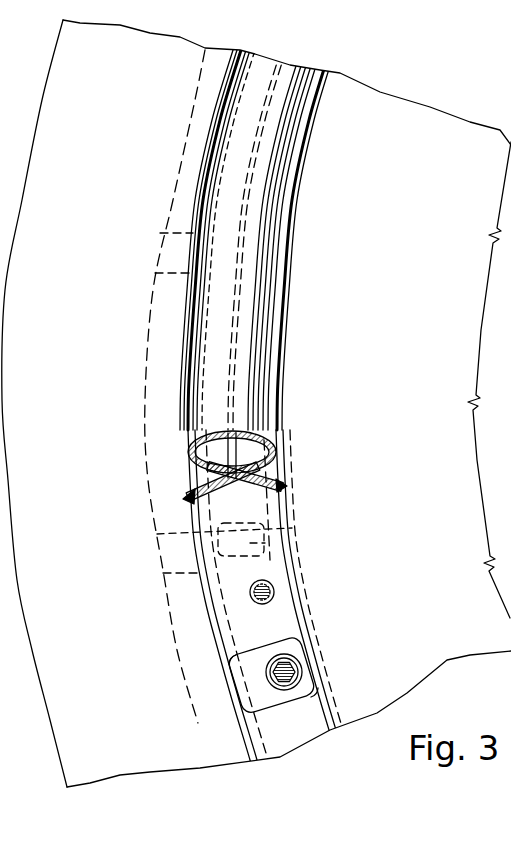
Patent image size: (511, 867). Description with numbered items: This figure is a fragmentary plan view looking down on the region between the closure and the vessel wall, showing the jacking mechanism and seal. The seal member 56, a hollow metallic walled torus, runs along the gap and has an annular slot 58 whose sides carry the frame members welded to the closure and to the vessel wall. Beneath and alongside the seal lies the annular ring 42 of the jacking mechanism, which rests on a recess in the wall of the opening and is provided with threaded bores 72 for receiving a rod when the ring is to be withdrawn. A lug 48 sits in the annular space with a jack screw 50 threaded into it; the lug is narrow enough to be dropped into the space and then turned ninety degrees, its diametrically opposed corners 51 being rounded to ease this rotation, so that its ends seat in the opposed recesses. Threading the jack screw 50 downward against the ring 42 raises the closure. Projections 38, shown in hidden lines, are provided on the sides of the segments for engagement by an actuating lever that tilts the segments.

The projections 38 is at (292, 528).
The annular ring 42 is at (236, 611).
The lugs 48 is at (292, 650).
The jack screws 50 is at (300, 668).
The diametrically opposed corners 51 is at (232, 659).
The seal member 56 is at (288, 349).
The annular slot 58 is at (233, 481).
The threaded bores 72 is at (268, 590).